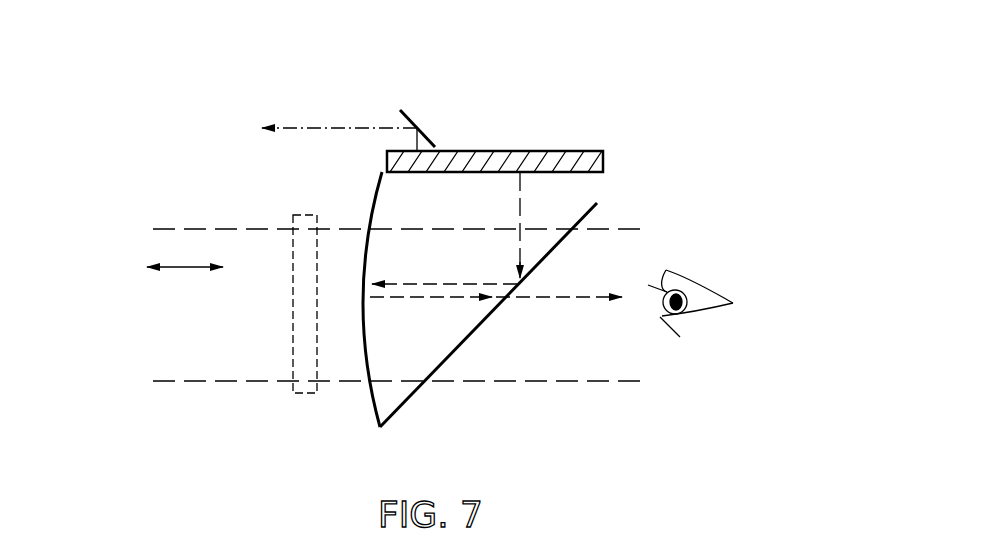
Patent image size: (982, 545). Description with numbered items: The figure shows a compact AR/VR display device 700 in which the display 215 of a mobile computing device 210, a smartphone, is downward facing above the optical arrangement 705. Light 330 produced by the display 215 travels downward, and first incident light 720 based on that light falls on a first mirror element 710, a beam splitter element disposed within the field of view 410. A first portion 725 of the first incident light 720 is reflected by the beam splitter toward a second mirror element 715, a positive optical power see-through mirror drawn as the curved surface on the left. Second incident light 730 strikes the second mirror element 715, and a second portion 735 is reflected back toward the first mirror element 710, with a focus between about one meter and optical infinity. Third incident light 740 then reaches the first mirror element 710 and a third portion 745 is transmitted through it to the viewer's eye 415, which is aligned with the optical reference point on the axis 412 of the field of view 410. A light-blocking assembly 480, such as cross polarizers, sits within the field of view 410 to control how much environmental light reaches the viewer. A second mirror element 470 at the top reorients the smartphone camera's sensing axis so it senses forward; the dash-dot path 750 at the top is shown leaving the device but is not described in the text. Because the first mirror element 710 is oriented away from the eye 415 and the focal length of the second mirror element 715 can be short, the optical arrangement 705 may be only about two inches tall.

The compact AR/VR display device 700 is at (735, 94).
The rejected light path 750 is at (307, 127).
The second mirror element 470 is at (422, 128).
The mobile computing device 210 is at (590, 150).
The light 330 is at (520, 173).
The first incident light 720 is at (516, 272).
The second mirror element 715 is at (377, 185).
The display 215 is at (479, 180).
The first mirror element 710 is at (600, 211).
The field of view 410 is at (221, 246).
The optical arrangement 705 is at (578, 399).
The axis 412 is at (185, 268).
The light-blocking assembly 480 is at (298, 395).
The second incident light 730 is at (367, 281).
The first portion 725 is at (516, 281).
The third incident light 740 is at (487, 299).
The third portion 745 is at (527, 298).
The second portion 735 is at (365, 298).
The eye 415 is at (700, 285).